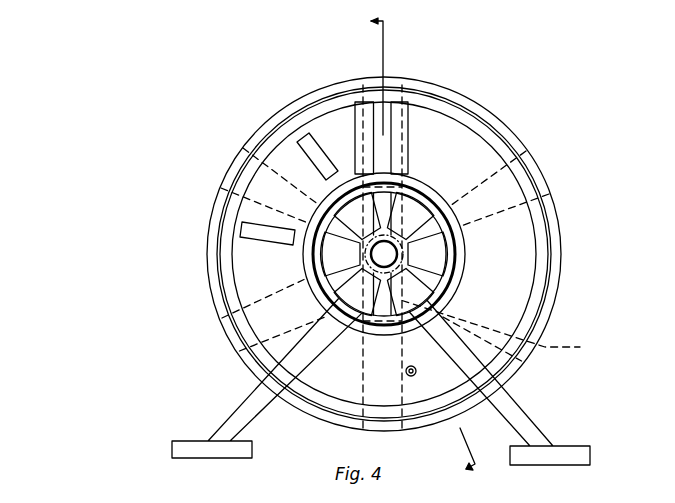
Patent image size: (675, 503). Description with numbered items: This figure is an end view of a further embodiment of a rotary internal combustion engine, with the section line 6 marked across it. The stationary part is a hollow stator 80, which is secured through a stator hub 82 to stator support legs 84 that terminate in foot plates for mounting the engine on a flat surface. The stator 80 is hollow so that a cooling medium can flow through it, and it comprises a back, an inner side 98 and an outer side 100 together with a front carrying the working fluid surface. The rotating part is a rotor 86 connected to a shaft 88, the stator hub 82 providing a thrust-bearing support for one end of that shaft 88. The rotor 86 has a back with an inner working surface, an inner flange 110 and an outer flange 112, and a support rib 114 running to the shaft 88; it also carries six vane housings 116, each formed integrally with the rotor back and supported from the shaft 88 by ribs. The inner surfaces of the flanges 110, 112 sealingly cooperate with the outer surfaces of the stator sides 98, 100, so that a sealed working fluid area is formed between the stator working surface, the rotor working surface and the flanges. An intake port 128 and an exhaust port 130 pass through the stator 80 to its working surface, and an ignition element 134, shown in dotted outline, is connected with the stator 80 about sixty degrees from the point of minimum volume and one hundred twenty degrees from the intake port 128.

The section line 6- 6 is at (413, 245).
The stator 80 is at (518, 288).
The stator hub 82 is at (400, 250).
The stator support legs 84 is at (530, 416).
The rotor 86 is at (543, 313).
The shaft 88 is at (385, 250).
The inner side 98 is at (368, 97).
The outer side 100 is at (400, 182).
The inner flange 110 is at (350, 195).
The outer flange 112 is at (452, 95).
The support rib 114 is at (432, 228).
The vane housings 116 is at (509, 256).
The intake port 128 is at (308, 140).
The exhaust port 130 is at (245, 223).
The ignition element 134 is at (437, 377).